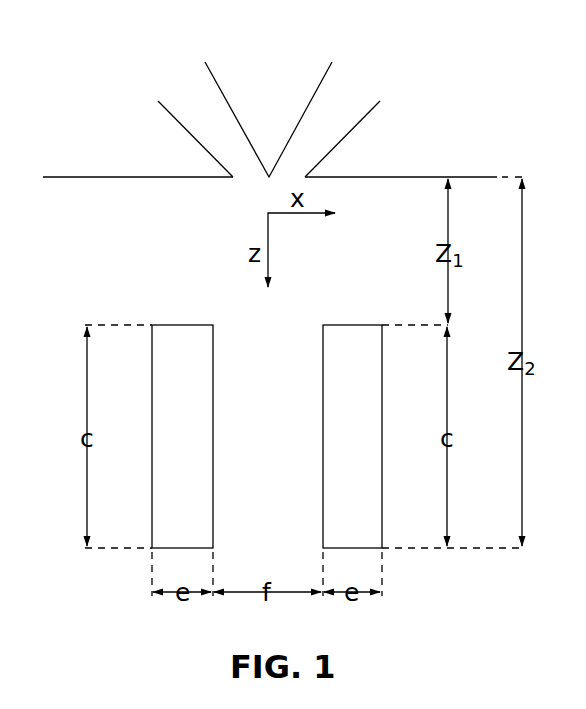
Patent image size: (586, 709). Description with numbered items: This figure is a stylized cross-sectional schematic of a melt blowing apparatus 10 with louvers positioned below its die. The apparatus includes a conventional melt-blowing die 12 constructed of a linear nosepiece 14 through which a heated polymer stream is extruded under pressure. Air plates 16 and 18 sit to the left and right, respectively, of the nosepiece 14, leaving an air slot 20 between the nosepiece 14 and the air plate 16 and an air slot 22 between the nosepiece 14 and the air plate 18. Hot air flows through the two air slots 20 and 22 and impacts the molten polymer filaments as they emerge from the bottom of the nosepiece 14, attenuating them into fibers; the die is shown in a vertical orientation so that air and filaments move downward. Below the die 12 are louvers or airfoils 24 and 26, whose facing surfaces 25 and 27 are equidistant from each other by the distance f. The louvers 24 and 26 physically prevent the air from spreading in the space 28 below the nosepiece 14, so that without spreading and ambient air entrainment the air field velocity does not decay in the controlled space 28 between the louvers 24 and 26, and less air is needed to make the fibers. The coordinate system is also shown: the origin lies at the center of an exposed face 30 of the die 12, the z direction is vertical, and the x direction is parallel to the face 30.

The melt blowing apparatus 10 is at (388, 37).
The melt-blowing die 12 is at (440, 62).
The nosepiece 14 is at (330, 70).
The air plate 16 is at (88, 178).
The air plate 18 is at (430, 178).
The air slot 20 is at (218, 130).
The air slot 22 is at (320, 130).
The louver 24 is at (182, 325).
The facing surface 25 is at (213, 382).
The louver 26 is at (353, 325).
The facing surface 27 is at (323, 432).
The space 28 is at (278, 347).
The exposed face 30 is at (200, 178).